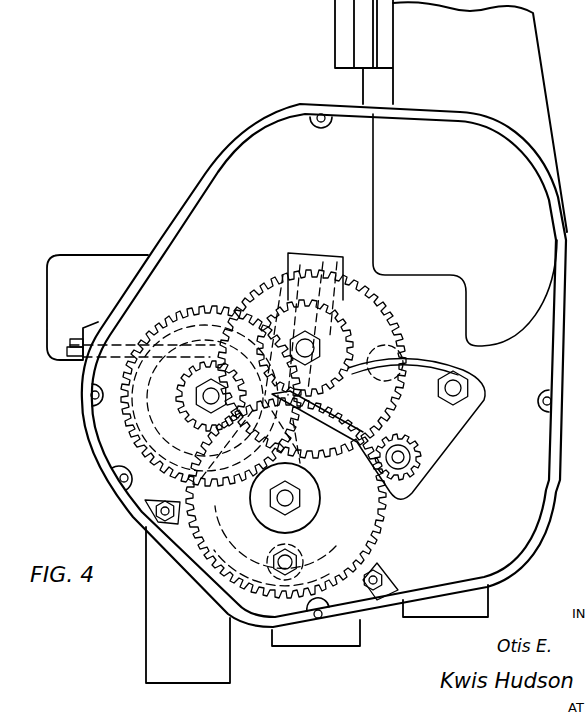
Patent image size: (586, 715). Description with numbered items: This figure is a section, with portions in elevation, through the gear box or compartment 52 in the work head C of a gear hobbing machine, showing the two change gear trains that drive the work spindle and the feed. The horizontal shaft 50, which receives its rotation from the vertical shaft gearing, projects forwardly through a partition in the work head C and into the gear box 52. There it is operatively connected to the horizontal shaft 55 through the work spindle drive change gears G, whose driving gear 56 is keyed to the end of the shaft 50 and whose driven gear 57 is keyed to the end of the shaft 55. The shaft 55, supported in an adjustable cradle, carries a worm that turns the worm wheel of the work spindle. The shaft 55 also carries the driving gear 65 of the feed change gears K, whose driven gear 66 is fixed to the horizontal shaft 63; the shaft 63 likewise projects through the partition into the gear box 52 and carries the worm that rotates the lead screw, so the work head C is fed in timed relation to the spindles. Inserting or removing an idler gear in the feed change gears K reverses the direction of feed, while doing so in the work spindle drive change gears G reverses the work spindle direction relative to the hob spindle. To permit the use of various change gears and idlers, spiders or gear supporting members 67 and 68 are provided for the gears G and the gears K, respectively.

The work head C is at (540, 127).
The gear box 52 is at (218, 202).
The gear supporting member 68 is at (335, 263).
The feed change gears K is at (272, 288).
The work spindle drive change gears G is at (396, 333).
The gear supporting member 67 is at (244, 304).
The driven gear 57 is at (173, 320).
The driving gear 65 is at (208, 404).
The horizontal shaft 55 is at (206, 400).
The driven gear 66 is at (366, 531).
The horizontal shaft 63 is at (292, 498).
The driving gear 56 is at (411, 442).
The horizontal shaft 50 is at (406, 457).